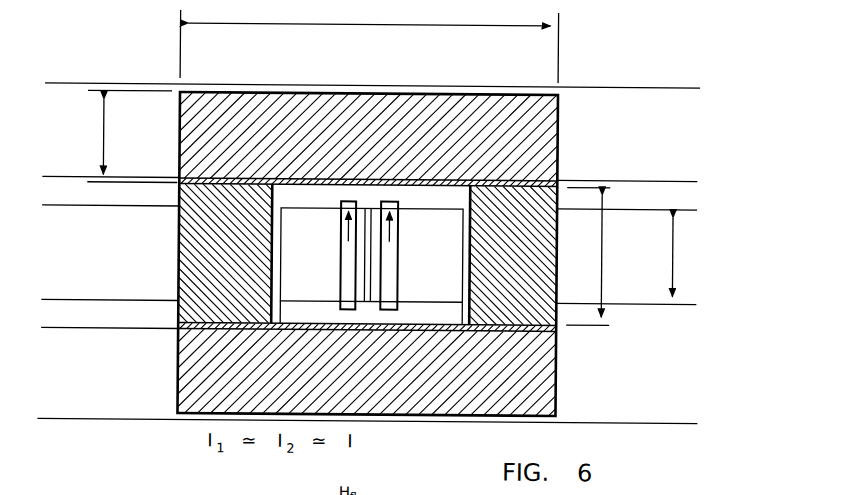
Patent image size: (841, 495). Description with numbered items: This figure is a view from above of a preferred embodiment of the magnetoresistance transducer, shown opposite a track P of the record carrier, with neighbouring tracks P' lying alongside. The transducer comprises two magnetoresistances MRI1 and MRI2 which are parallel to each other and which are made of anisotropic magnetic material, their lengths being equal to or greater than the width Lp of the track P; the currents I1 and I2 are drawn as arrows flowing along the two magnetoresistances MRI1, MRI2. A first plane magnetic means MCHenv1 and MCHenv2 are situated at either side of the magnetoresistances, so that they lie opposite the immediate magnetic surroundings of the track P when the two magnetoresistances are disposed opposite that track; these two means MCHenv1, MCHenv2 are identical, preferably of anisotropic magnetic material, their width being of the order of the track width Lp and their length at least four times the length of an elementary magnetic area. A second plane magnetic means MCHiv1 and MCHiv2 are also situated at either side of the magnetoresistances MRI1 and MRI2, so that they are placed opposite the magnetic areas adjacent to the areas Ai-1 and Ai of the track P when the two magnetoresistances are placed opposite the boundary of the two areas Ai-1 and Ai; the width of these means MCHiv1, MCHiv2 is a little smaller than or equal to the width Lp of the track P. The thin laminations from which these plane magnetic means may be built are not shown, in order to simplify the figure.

The first plane magnetic means MCHenv2 is at (330, 87).
The first plane magnetic means MCHenv1 is at (545, 379).
The second plane magnetic means MCHiv1 is at (197, 273).
The second plane magnetic means MCHiv2 is at (540, 291).
The magnetoresistance MRI1 is at (342, 240).
The magnetoresistance MRI2 is at (399, 250).
The current in first element I1 is at (349, 241).
The current in second element I2 is at (390, 242).
The area Ai-1 is at (285, 307).
The area Ai is at (412, 307).
The track P is at (368, 314).
The track P' is at (367, 436).
The width of the track Lp is at (369, 251).